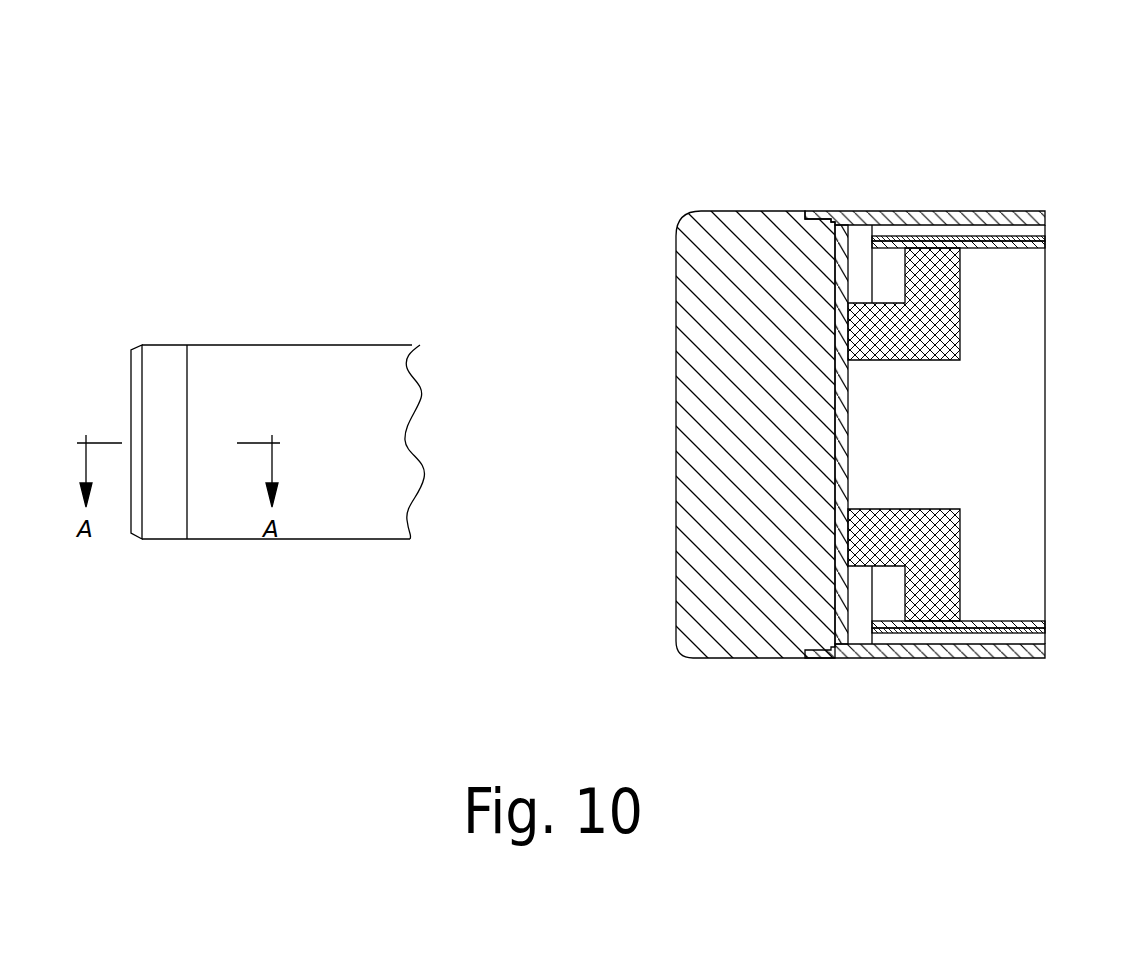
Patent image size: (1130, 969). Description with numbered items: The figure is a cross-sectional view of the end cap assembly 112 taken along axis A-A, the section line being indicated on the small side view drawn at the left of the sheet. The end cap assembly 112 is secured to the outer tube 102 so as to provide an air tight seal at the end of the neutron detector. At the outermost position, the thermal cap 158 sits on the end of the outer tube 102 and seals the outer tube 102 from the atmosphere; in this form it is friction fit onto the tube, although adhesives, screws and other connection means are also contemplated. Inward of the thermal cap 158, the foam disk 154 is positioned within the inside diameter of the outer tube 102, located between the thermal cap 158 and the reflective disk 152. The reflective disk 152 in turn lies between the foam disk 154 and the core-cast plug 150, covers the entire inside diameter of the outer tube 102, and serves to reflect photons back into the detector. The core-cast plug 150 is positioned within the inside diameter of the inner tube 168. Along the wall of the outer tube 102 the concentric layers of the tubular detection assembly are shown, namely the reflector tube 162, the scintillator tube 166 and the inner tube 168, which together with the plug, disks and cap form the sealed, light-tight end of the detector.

The outer tube 102 is at (345, 345).
The end cap assembly 112 is at (172, 345).
The core-cast plug 150 is at (963, 247).
The reflective disk 152 is at (851, 240).
The foam disk 154 is at (845, 224).
The thermal cap 158 is at (718, 212).
The reflector tube 162 is at (1038, 637).
The scintillator tube 166 is at (1042, 238).
The inner tube 168 is at (1027, 250).